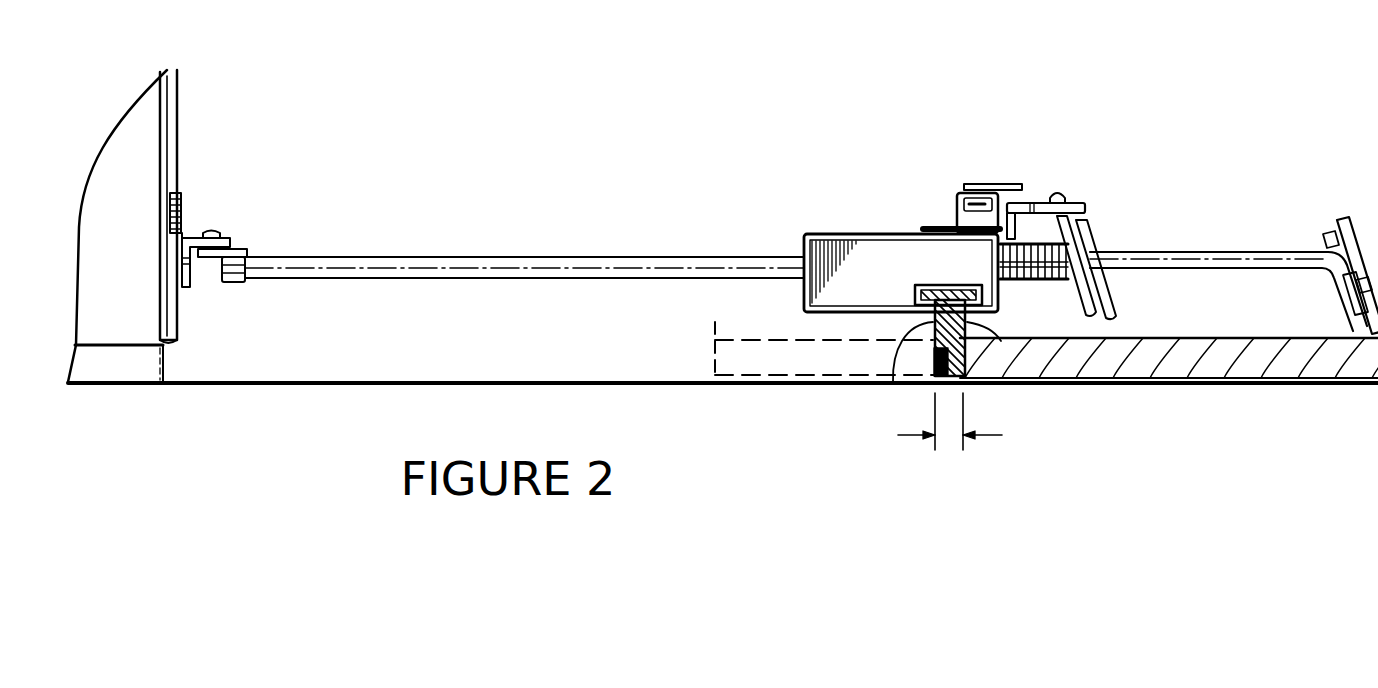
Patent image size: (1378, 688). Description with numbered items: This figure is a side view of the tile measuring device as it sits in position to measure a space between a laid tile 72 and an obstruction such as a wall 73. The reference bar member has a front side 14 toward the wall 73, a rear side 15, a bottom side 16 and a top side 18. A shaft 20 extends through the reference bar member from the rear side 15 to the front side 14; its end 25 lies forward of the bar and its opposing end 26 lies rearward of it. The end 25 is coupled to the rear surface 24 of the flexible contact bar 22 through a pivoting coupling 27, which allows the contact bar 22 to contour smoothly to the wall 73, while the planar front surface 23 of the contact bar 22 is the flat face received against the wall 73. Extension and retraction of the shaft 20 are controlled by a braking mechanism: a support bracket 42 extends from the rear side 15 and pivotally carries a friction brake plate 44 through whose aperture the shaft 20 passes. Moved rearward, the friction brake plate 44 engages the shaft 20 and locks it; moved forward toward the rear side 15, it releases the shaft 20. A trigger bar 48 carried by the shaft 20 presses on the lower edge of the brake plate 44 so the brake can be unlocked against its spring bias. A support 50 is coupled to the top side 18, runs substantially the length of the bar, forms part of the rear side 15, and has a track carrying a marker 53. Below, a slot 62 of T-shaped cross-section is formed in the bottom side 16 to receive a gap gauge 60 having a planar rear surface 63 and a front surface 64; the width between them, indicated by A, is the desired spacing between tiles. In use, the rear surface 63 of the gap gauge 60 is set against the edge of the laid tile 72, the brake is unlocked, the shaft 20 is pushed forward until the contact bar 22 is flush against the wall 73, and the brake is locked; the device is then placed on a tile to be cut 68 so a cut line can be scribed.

The front side 14 is at (804, 293).
The rear side 15 is at (1003, 293).
The bottom side 16 is at (863, 313).
The top side 18 is at (818, 235).
The shaft 20 is at (487, 268).
The flexible contact bar 22 is at (188, 193).
The planar front surface 23 is at (160, 310).
The rear surface 24 is at (178, 300).
The end 25 is at (252, 257).
The opposing end 26 is at (1300, 253).
The pivoting coupling 27 is at (232, 206).
The support bracket 42 is at (1033, 204).
The friction brake plate 44 is at (1082, 186).
The trigger bar 48 is at (1090, 243).
The support 50 is at (957, 203).
The marker 53 is at (993, 183).
The gap gauge 60 is at (960, 390).
The slot 62 is at (908, 292).
The planar rear surface 63 is at (1013, 345).
The front surface 64 is at (893, 385).
The tile to be cut 68 is at (763, 358).
The laid tile 72 is at (1262, 358).
The wall 73 is at (170, 73).
The spacing between tiles A is at (995, 437).